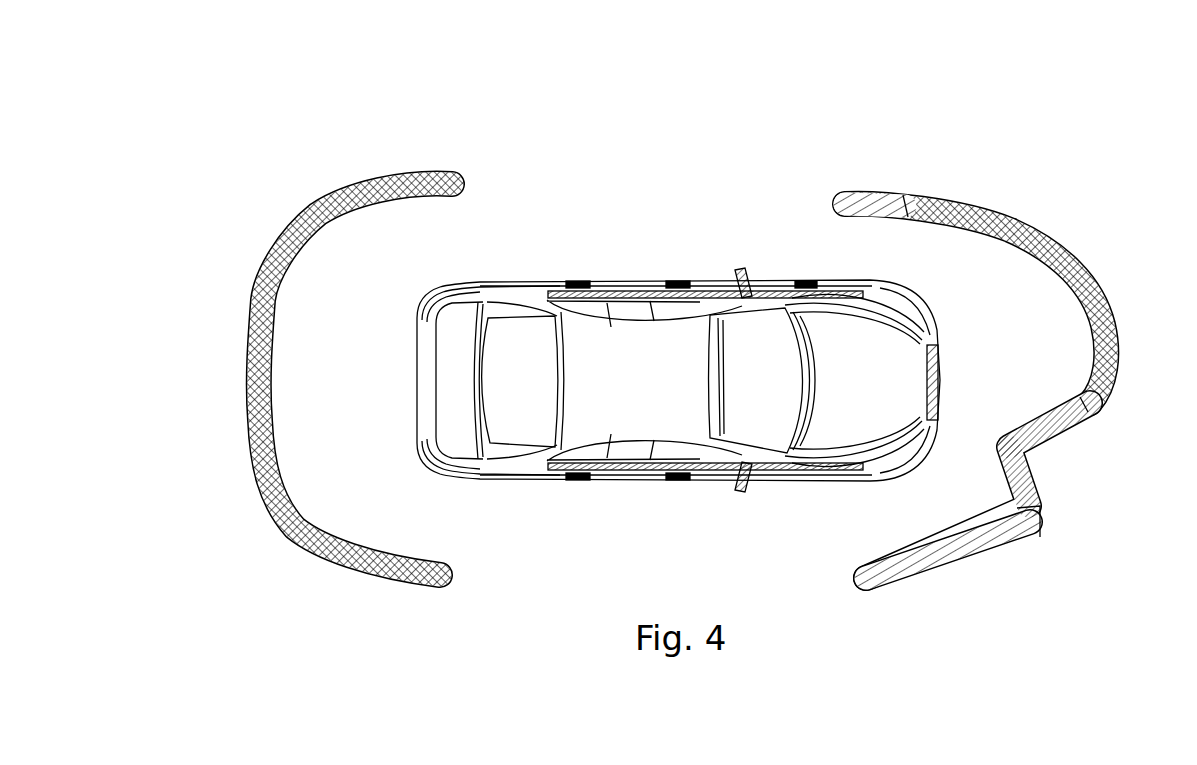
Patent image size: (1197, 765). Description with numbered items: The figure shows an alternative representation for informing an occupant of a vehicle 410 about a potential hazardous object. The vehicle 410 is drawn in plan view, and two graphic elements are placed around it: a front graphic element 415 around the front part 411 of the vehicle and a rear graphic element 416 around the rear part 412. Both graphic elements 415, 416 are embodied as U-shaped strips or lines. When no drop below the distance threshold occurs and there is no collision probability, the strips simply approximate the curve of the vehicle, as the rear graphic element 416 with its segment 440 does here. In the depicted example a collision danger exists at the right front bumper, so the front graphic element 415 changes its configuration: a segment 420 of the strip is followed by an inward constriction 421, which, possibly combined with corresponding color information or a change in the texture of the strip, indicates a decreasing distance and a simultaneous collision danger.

The vehicle 410 is at (678, 358).
The front part of vehicle 411 is at (863, 320).
The rear part of vehicle 412 is at (468, 320).
The front graphic element 415 is at (997, 318).
The rear graphic element 416 is at (309, 316).
The segment 420 is at (1062, 238).
The constriction 421 is at (1033, 452).
The segment 440 is at (262, 283).